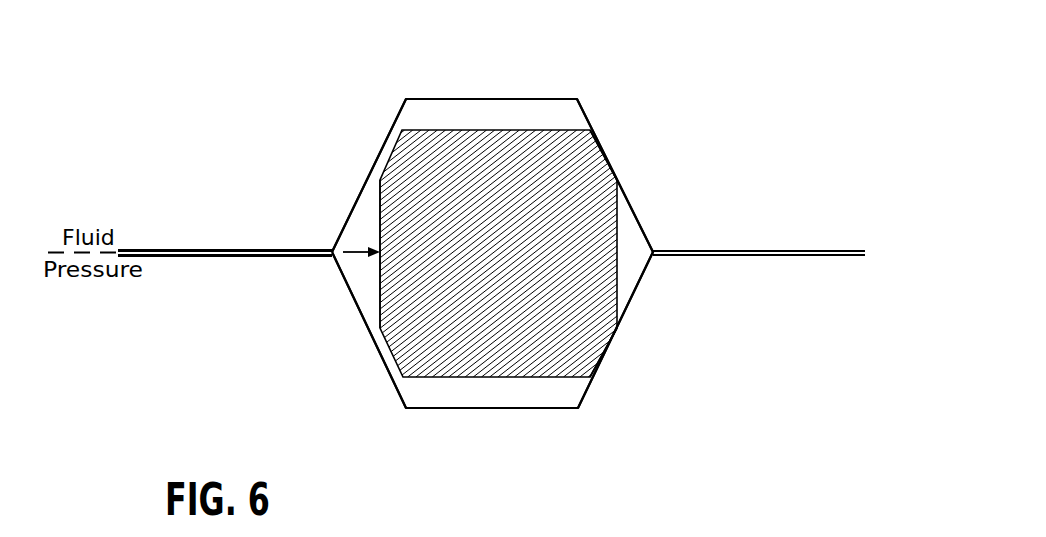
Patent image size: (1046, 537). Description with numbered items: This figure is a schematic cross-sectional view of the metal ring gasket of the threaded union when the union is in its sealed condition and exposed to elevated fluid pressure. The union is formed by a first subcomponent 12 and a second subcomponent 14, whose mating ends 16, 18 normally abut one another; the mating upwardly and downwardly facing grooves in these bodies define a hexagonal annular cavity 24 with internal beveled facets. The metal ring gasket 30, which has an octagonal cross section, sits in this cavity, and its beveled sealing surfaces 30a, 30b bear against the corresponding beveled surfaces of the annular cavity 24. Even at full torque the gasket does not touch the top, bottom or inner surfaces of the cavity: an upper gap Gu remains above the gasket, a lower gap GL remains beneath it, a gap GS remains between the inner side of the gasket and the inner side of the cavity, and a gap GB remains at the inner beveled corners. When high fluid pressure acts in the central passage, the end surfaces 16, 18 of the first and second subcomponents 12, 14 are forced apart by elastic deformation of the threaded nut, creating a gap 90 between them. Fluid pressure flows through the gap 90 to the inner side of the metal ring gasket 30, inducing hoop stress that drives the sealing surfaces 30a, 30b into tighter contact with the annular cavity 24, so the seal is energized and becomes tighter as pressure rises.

The first subcomponent 12 is at (713, 319).
The second subcomponent 14 is at (713, 226).
The mating end 16 is at (263, 256).
The mating end 18 is at (195, 249).
The hexagonal annular cavity 24 is at (406, 391).
The metal ring gasket 30 is at (507, 264).
The sealing surface 30a is at (608, 160).
The sealing surface 30b is at (607, 345).
The gap 90 is at (306, 251).
The upper gap Gu is at (453, 110).
The lower gap GL is at (470, 398).
The gap GB is at (386, 158).
The gap GS is at (362, 268).